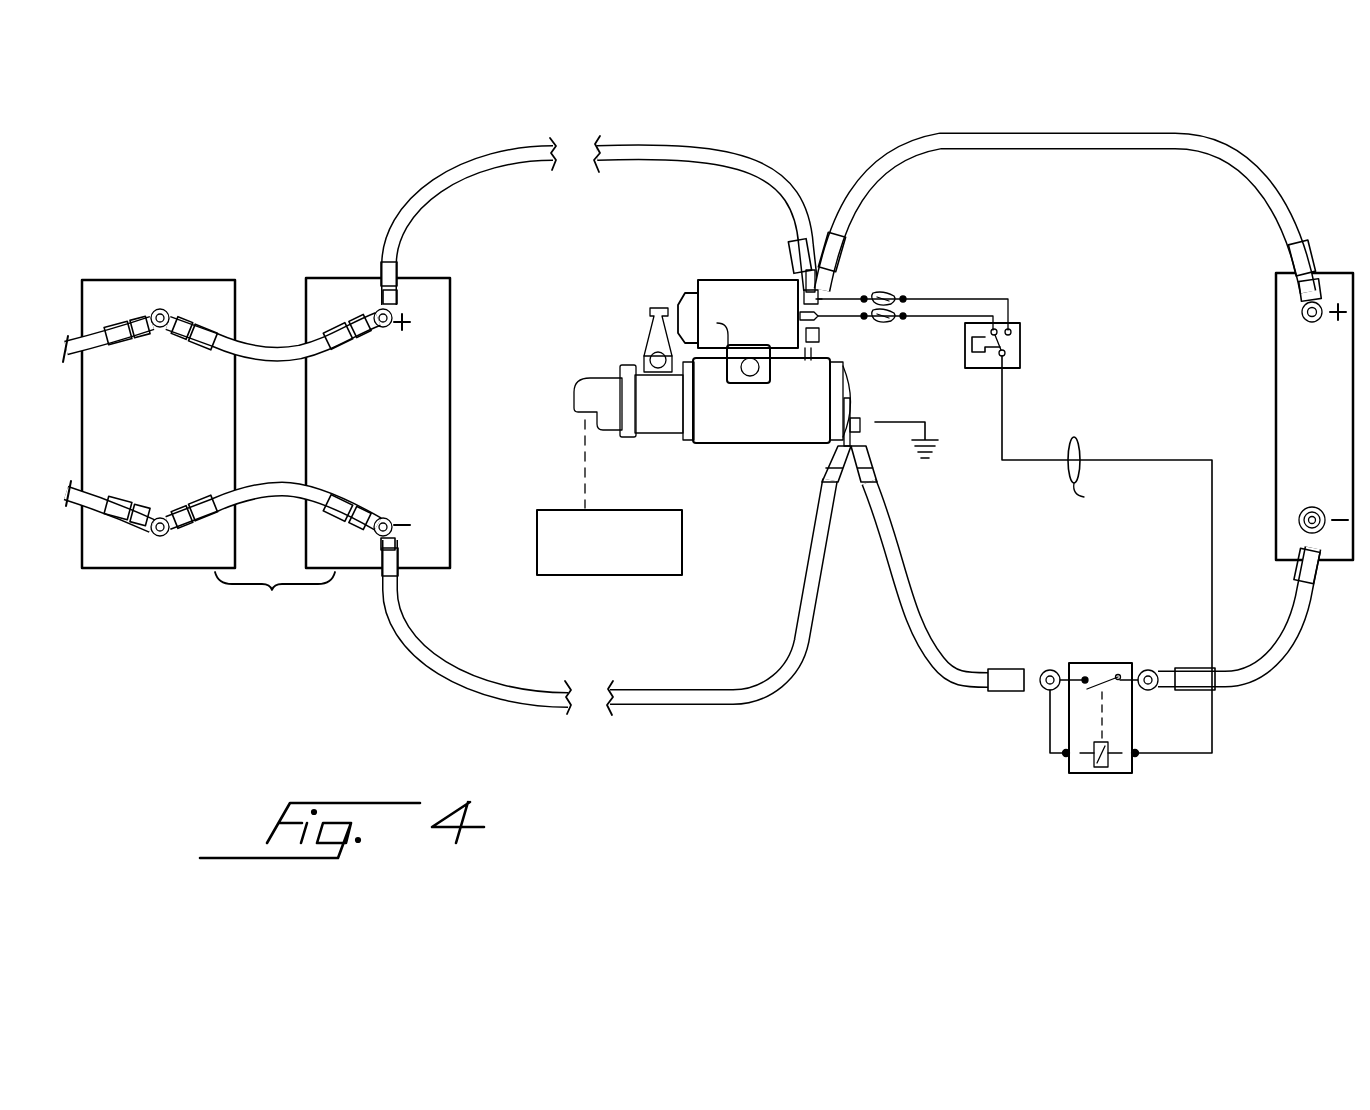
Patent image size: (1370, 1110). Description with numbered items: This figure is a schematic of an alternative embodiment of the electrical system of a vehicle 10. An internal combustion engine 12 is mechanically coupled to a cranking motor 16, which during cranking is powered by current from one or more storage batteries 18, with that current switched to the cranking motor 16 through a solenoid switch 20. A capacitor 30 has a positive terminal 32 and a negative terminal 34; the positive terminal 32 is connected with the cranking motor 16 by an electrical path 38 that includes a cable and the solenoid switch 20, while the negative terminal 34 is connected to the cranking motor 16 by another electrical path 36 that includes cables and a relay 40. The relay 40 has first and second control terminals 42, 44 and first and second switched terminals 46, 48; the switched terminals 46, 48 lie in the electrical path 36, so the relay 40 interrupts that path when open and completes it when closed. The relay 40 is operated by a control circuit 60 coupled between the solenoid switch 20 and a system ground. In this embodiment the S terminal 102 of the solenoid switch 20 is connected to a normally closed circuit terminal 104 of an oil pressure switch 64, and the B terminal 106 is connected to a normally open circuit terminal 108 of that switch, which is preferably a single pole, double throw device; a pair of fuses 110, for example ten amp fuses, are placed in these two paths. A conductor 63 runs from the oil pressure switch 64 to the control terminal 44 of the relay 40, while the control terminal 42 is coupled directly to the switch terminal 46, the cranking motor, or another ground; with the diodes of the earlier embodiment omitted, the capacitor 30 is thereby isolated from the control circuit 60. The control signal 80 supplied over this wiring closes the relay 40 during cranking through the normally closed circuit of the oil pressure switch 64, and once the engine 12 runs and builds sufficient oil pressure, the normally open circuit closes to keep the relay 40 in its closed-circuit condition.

The vehicle 10 is at (589, 251).
The internal combustion engine 12 is at (609, 497).
The cranking motor 16 is at (738, 447).
The storage batteries 18 is at (256, 450).
The solenoid switch 20 is at (738, 280).
The capacitor 30 is at (1282, 380).
The positive terminal 32 is at (1301, 303).
The negative terminal 34 is at (1292, 508).
The electrical path 36 is at (1277, 676).
The electrical path 38 is at (1100, 130).
The relay 40 is at (1096, 663).
The first control terminal 42 is at (1060, 762).
The second control terminal 44 is at (1140, 762).
The first switched terminal 46 is at (1052, 670).
The second switched terminal 48 is at (1148, 670).
The control circuit 60 is at (1096, 400).
The conductor 63 is at (1002, 461).
The oil pressure switch 64 is at (1022, 341).
The control signal 80 is at (1134, 489).
The S terminal 102 is at (818, 322).
The normally closed circuit terminal 104 is at (976, 302).
The B terminal 106 is at (822, 292).
The normally open circuit terminal 108 is at (1020, 345).
The fuses 110 is at (888, 298).